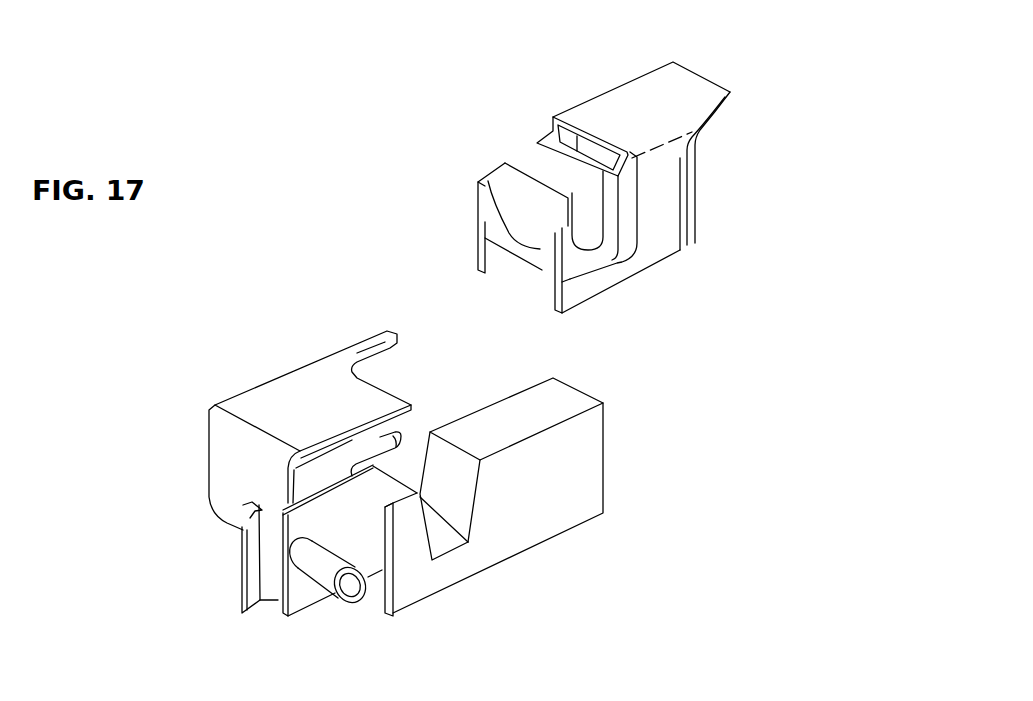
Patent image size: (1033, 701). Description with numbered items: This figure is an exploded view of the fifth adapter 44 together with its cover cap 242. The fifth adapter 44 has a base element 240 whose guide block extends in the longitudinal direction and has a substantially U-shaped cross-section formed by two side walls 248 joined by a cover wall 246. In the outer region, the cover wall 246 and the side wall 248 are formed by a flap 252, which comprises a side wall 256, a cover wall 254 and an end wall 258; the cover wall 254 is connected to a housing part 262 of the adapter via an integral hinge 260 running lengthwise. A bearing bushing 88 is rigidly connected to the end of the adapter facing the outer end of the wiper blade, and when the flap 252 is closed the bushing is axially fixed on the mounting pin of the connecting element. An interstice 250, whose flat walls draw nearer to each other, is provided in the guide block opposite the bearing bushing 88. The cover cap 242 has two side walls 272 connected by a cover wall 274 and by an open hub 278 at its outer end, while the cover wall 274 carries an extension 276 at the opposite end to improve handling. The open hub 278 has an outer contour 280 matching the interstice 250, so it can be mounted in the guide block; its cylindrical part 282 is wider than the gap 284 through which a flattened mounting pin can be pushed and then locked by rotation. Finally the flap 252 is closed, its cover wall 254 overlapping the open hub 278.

The fifth adapter 44 is at (284, 447).
The bearing bushing 88 is at (325, 573).
The base element 240 is at (564, 472).
The cover cap 242 is at (645, 167).
The cover wall 246 is at (540, 410).
The side wall 248 is at (305, 603).
The interstice 250 is at (450, 502).
The flap 252 is at (301, 447).
The cover wall 254 is at (377, 367).
The side wall 256 is at (320, 400).
The end wall 258 is at (233, 458).
The integral hinge 260 is at (240, 547).
The housing part 262 is at (247, 583).
The side wall 272 is at (660, 212).
The cover wall 274 is at (632, 110).
The extension 276 is at (700, 70).
The open hub 278 is at (518, 153).
The outer contour 280 is at (530, 222).
The cylindrical part 282 is at (593, 220).
The gap 284 is at (548, 140).